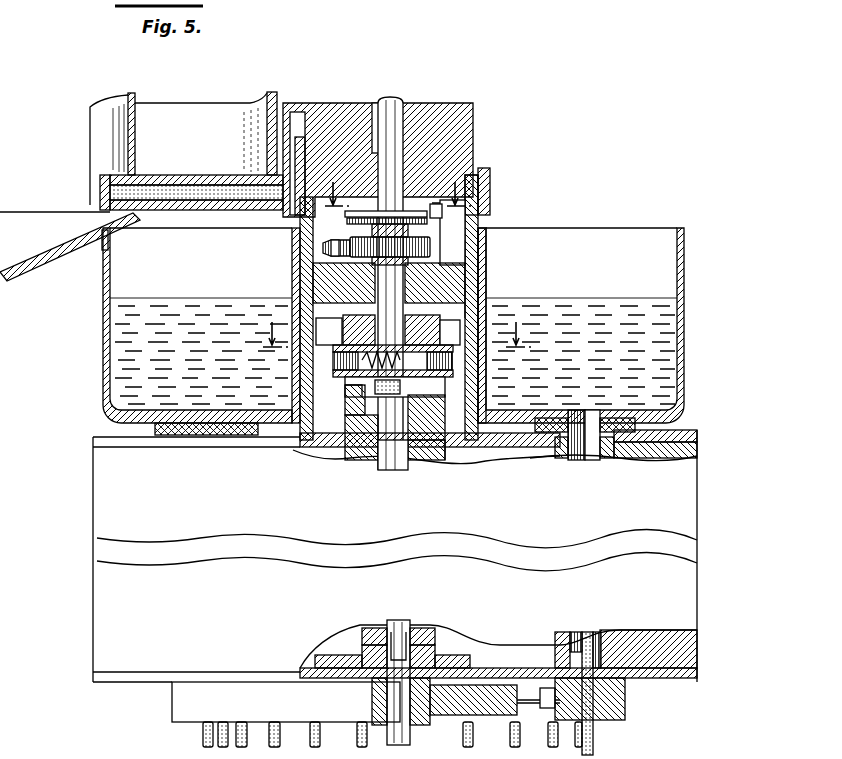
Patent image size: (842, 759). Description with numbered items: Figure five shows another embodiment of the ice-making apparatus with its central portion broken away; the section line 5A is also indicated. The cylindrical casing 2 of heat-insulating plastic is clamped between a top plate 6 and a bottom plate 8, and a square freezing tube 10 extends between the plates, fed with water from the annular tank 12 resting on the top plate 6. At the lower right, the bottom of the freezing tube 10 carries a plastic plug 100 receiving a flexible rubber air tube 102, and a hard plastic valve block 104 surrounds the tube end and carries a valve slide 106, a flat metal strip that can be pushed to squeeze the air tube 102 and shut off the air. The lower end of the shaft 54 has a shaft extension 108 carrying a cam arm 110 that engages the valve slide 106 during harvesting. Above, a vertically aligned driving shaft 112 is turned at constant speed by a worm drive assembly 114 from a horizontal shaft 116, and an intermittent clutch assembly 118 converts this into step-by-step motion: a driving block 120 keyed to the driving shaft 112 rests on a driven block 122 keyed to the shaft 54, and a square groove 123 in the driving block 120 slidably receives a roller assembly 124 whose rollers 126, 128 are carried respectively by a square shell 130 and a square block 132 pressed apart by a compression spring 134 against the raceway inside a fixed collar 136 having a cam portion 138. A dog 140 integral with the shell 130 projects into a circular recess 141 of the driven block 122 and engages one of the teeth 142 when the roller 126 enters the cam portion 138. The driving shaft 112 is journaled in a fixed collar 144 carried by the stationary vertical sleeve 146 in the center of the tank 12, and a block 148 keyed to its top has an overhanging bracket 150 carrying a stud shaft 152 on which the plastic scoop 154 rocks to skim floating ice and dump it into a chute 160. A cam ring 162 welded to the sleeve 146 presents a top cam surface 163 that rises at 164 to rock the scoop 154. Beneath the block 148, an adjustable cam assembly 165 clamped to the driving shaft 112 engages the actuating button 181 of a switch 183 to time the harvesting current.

The cylindrical casing 2 is at (97, 571).
The top plate 6 is at (100, 437).
The bottom plate 8 is at (105, 680).
The freezing tube 10 is at (594, 445).
The annular tank 12 is at (684, 244).
The shaft 54 is at (390, 462).
The plastic plug 100 is at (598, 640).
The flexible rubber air tube 102 is at (594, 744).
The valve block 104 is at (180, 715).
The valve slide 106 is at (555, 690).
The shaft extension 108 is at (372, 702).
The cam arm 110 is at (478, 690).
The driving shaft 112 is at (395, 122).
The worm drive assembly 114 is at (347, 258).
The horizontal shaft 116 is at (333, 241).
The intermittent clutch assembly 118 is at (470, 324).
The driving block 120 is at (412, 315).
The driven block 122 is at (430, 456).
The square groove 123 is at (336, 332).
The roller assembly 124 is at (372, 395).
The roller 126 is at (345, 364).
The roller 128 is at (452, 330).
The square shell 130 is at (395, 587).
The square block 132 is at (418, 348).
The compression spring 134 is at (378, 345).
The fixed collar 136 is at (465, 364).
The cam portion 138 is at (302, 324).
The dog 140 is at (415, 398).
The circular recess 141 is at (368, 398).
The teeth 142 is at (432, 393).
The fixed collar 144 is at (480, 263).
The vertical sleeve 146 is at (331, 256).
The block 148 is at (457, 120).
The overhanging bracket 150 is at (300, 112).
The stud shaft 152 is at (170, 190).
The scoop 154 is at (126, 94).
The chute 160 is at (31, 271).
The cam ring 162 is at (490, 190).
The cam surface 163 is at (490, 172).
The rising portion of cam surface 164 is at (266, 124).
The adjustable cam assembly 165 is at (375, 211).
The actuating button 181 is at (434, 205).
The switch 183 is at (455, 224).
The section line 5A is at (396, 186).